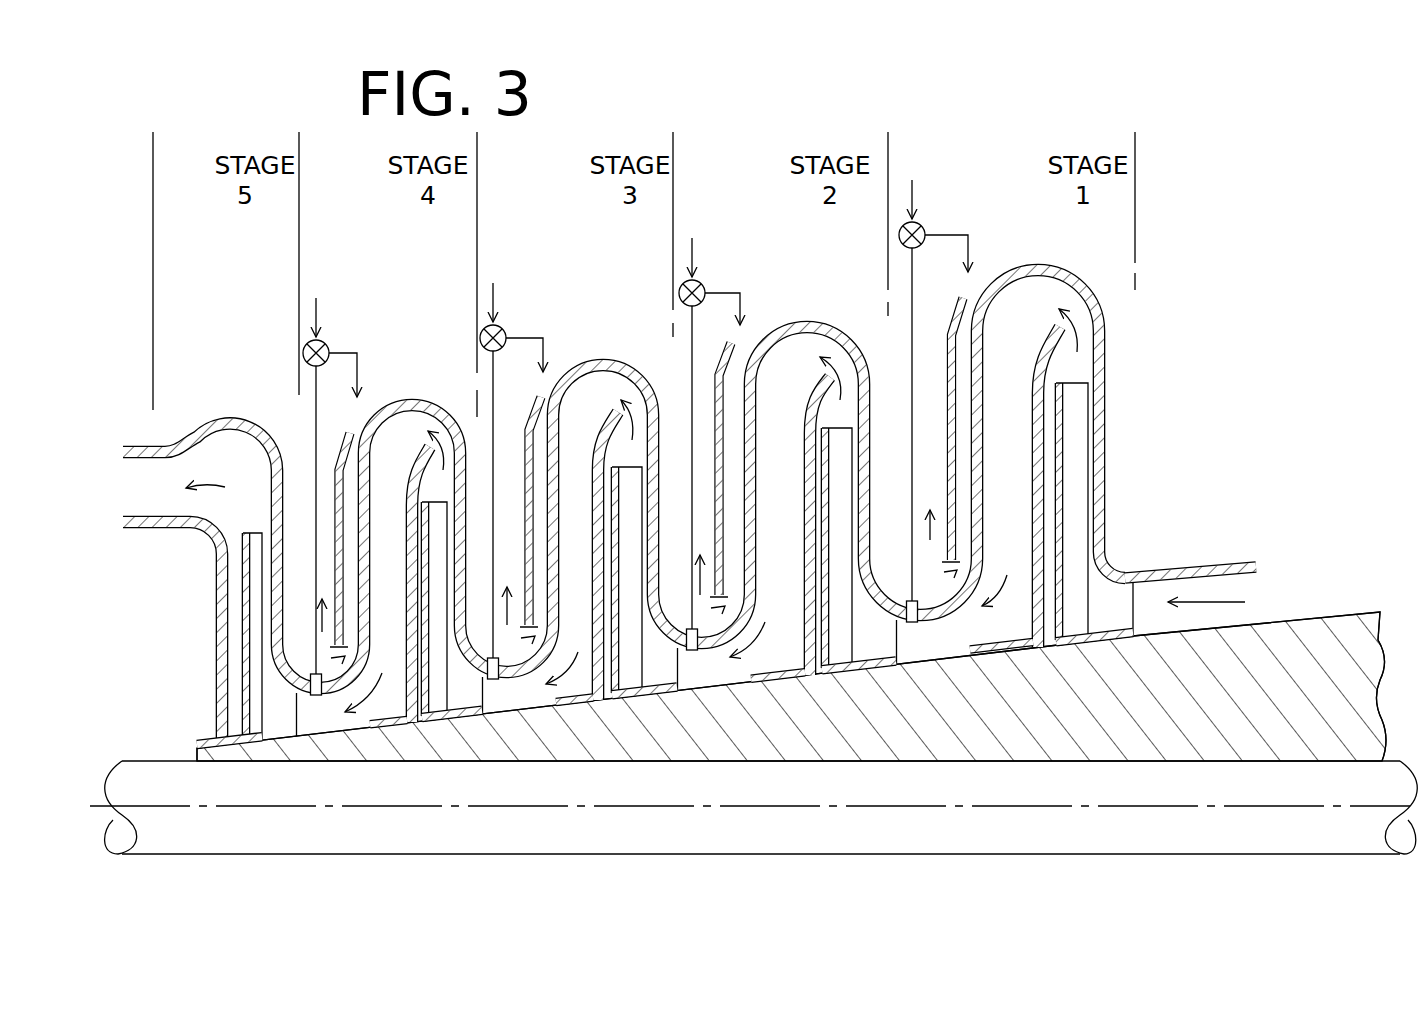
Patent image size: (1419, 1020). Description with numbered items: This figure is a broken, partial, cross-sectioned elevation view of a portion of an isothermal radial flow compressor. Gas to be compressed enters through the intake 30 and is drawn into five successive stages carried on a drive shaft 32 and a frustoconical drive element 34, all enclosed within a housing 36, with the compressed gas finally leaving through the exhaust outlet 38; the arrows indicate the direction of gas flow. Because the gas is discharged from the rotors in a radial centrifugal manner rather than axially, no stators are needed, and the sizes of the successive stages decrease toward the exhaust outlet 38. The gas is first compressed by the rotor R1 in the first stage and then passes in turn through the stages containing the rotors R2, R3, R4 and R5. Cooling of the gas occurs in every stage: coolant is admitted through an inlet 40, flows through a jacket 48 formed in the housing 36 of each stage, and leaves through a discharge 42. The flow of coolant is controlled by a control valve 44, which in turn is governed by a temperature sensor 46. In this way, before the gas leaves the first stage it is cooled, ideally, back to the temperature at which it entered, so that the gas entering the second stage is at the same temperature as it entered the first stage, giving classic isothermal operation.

The intake 30 is at (1290, 607).
The drive shaft 32 is at (988, 797).
The frustoconical drive element 34 is at (941, 711).
The housing 36 is at (200, 428).
The exhaust outlet 38 is at (152, 501).
The inlet 40 is at (358, 372).
The discharge 42 is at (318, 628).
The control valve 44 is at (326, 340).
The temperature sensor 46 is at (316, 695).
The jacket 48 is at (343, 470).
The rotor R1 is at (1071, 622).
The rotor R2 is at (845, 649).
The rotor R3 is at (625, 677).
The rotor R4 is at (437, 705).
The rotor R5 is at (254, 730).